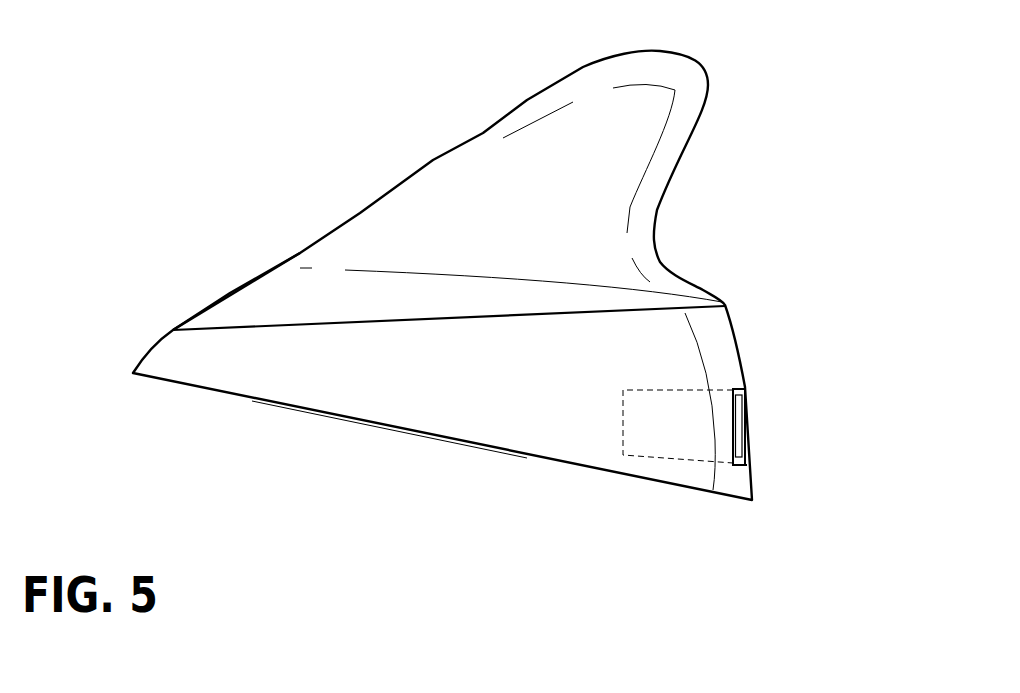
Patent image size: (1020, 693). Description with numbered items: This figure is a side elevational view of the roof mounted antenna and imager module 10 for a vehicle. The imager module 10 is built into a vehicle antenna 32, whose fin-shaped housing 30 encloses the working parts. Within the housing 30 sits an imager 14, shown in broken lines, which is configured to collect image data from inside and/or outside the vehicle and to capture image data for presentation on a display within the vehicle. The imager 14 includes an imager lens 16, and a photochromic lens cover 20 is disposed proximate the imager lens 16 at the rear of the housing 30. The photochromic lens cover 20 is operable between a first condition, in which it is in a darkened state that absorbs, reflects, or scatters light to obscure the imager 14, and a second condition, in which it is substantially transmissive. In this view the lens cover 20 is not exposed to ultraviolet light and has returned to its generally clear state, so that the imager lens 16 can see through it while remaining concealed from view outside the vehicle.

The imager module 10 is at (862, 346).
The imager 14 is at (683, 410).
The imager lens 16 is at (746, 433).
The photochromic lens cover 20 is at (745, 392).
The housing 30 is at (240, 303).
The vehicle antenna 32 is at (533, 112).